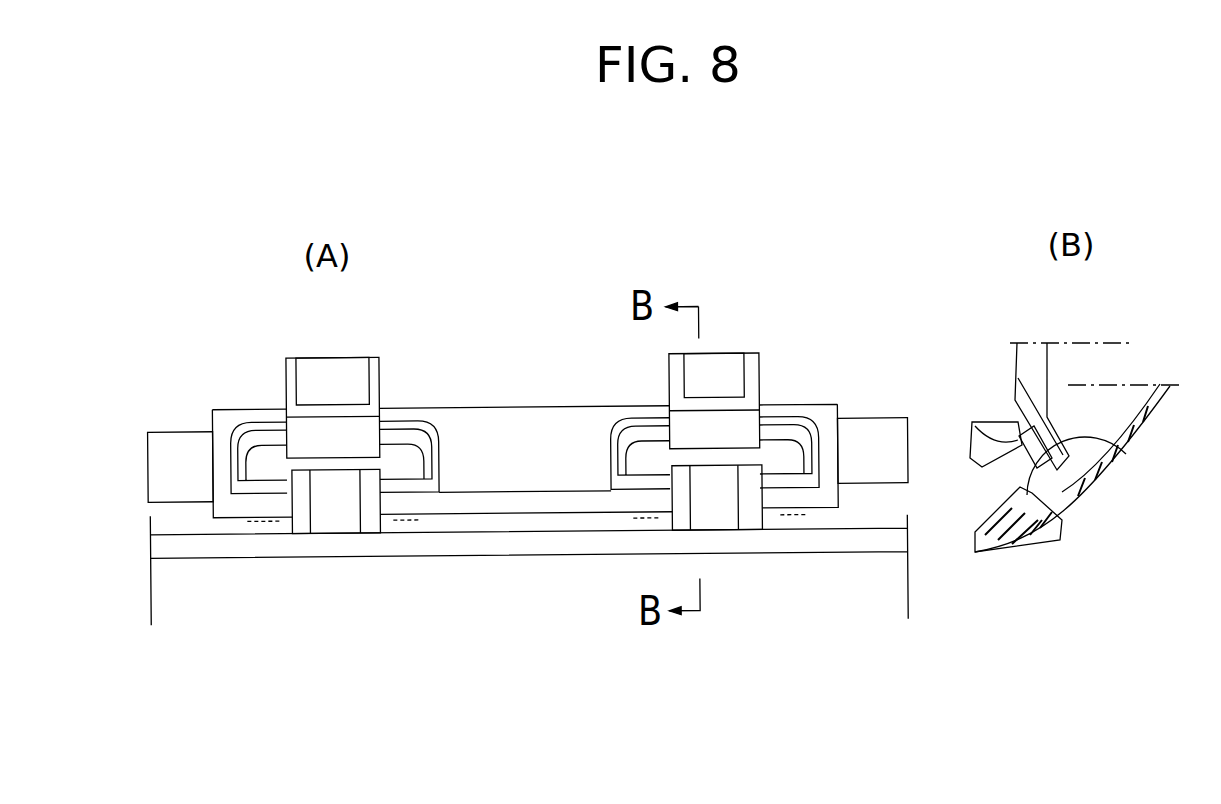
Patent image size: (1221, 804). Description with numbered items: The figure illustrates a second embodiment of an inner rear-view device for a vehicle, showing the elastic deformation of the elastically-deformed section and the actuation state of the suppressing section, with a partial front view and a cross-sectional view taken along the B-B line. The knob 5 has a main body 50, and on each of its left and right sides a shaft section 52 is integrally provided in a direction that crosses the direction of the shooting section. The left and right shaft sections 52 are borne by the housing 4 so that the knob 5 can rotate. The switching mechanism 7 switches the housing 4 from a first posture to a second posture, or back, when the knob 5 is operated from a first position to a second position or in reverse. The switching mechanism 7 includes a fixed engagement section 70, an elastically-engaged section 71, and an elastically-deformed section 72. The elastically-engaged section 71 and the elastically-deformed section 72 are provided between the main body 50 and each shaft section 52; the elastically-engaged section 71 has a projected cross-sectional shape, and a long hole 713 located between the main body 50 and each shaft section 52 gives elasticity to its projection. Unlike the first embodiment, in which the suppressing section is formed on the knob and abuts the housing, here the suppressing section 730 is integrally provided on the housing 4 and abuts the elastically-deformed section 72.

The housing 4 is at (511, 558).
The knob 5 is at (545, 402).
The main body 50 is at (497, 436).
The shaft section 52 is at (873, 421).
The switching mechanism 7 is at (268, 386).
The fixed engagement section 70 is at (715, 429).
The elastically-engaged section 71 is at (775, 455).
The long hole 713 is at (416, 427).
The elastically-deformed section 72 is at (820, 532).
The suppressing section 730 is at (695, 503).